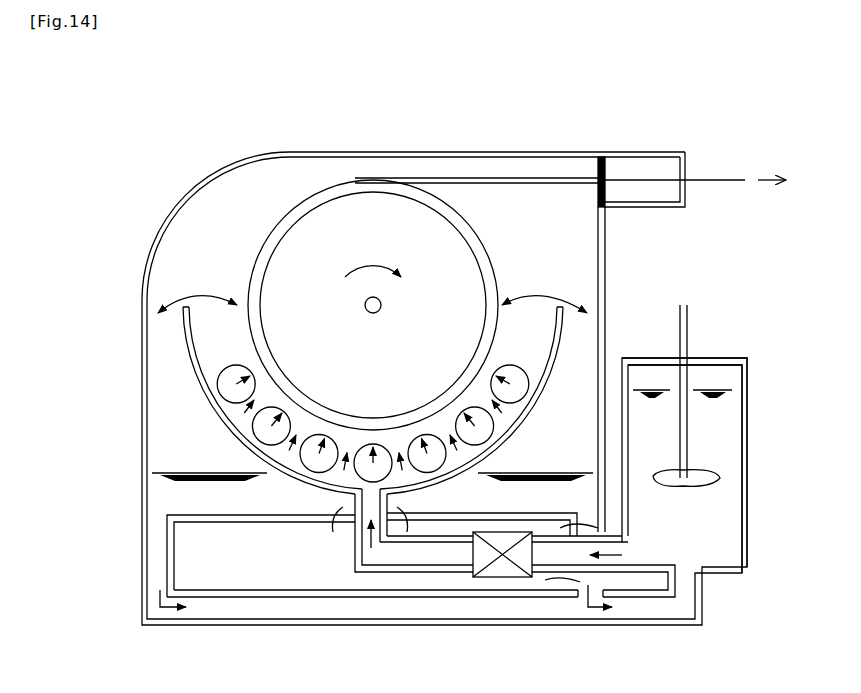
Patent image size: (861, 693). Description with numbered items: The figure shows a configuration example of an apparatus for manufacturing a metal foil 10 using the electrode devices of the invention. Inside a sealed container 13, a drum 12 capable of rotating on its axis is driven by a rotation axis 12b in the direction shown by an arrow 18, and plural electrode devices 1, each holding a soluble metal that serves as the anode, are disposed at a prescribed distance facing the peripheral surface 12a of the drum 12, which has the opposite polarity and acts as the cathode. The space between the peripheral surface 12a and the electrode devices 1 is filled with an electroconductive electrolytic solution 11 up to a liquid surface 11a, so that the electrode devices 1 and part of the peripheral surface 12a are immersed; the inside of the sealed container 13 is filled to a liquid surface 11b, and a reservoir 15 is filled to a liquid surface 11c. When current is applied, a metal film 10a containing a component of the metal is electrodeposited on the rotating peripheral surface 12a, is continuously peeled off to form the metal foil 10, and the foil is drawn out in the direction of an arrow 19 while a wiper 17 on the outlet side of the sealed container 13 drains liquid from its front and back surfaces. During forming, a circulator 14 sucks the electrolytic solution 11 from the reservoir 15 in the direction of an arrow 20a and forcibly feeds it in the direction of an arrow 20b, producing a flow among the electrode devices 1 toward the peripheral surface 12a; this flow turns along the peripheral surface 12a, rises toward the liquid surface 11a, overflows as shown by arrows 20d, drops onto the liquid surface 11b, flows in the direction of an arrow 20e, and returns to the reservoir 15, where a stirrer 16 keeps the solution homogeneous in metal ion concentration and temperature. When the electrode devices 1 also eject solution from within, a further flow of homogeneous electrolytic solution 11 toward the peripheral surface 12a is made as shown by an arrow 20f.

The electrode device 1 is at (253, 373).
The metal foil 10 is at (542, 180).
The metal film 10a is at (381, 178).
The electrolytic solution 11 is at (193, 498).
The liquid surface 11a is at (227, 305).
The liquid surface 11b is at (190, 467).
The liquid surface 11c is at (715, 383).
The drum 12 is at (402, 210).
The peripheral surface 12a is at (452, 200).
The rotation axis 12b is at (365, 300).
The sealed container 13 is at (287, 153).
The circulator 14 is at (498, 570).
The reservoir 15 is at (743, 528).
The stirrer 16 is at (713, 475).
The wiper 17 is at (603, 155).
The arrow 18 is at (377, 257).
The arrow 19 is at (763, 173).
The arrow 20a is at (613, 558).
The arrow 20b is at (378, 547).
The arrows 20d is at (182, 295).
The arrow 20e is at (167, 607).
The arrow 20f is at (270, 427).